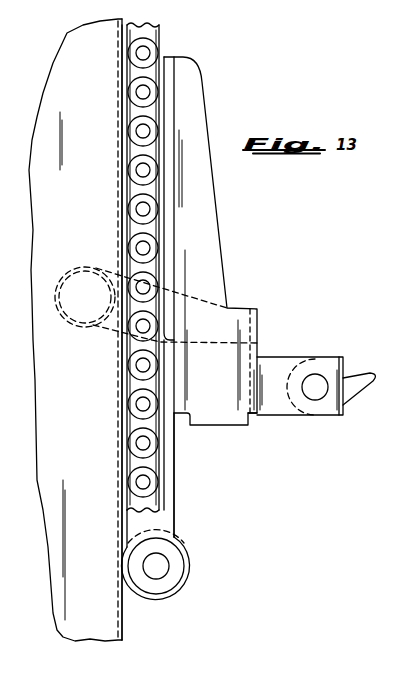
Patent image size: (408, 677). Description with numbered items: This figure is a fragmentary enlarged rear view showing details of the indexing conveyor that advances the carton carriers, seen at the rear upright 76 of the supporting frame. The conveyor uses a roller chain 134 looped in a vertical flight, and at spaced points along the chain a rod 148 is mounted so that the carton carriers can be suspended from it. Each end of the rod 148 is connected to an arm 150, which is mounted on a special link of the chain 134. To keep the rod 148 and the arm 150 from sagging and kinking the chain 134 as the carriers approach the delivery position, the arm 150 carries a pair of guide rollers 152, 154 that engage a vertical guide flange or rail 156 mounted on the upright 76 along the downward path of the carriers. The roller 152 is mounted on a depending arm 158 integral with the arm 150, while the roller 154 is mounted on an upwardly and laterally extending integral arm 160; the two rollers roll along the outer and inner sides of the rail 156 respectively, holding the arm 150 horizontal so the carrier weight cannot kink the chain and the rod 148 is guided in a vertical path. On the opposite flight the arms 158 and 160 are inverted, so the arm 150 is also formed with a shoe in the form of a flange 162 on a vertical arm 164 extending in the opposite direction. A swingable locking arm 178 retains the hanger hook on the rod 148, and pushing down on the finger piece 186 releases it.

The rear upright 76 is at (55, 538).
The roller chain 134 is at (133, 114).
The rod 148 is at (318, 375).
The arm 150 is at (267, 416).
The guide roller 152 is at (185, 571).
The guide roller 154 is at (80, 266).
The guide flange or rail 156 is at (123, 626).
The depending arm 158 is at (167, 518).
The upwardly and laterally extending arm 160 is at (103, 328).
The flange 162 is at (169, 117).
The vertical arm 164 is at (215, 209).
The locking arm 178 is at (315, 417).
The finger piece 186 is at (372, 374).